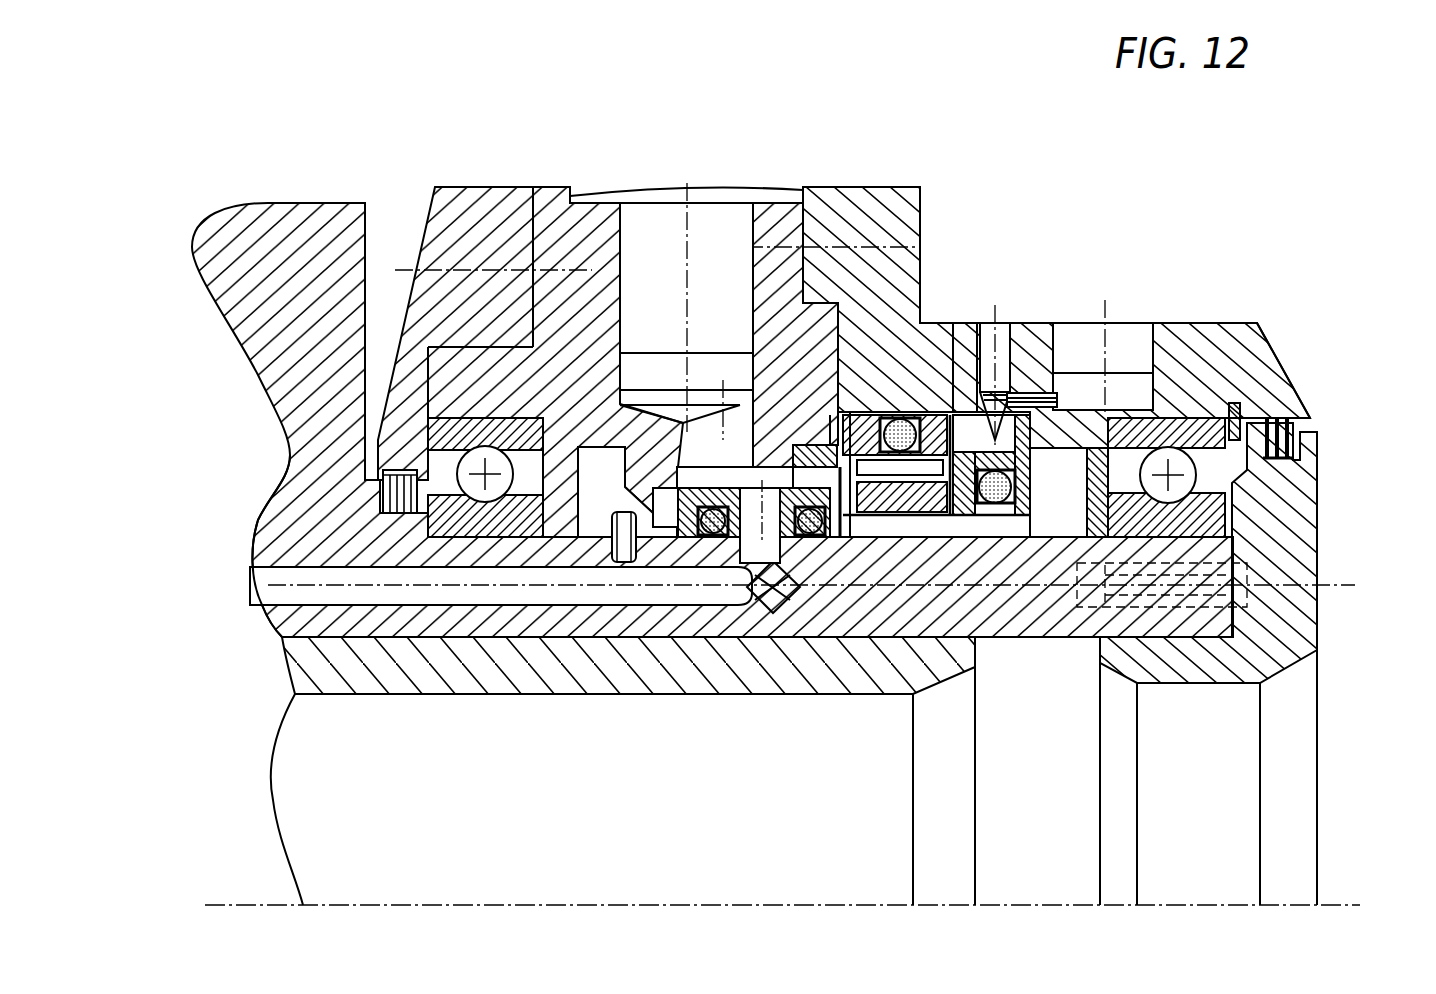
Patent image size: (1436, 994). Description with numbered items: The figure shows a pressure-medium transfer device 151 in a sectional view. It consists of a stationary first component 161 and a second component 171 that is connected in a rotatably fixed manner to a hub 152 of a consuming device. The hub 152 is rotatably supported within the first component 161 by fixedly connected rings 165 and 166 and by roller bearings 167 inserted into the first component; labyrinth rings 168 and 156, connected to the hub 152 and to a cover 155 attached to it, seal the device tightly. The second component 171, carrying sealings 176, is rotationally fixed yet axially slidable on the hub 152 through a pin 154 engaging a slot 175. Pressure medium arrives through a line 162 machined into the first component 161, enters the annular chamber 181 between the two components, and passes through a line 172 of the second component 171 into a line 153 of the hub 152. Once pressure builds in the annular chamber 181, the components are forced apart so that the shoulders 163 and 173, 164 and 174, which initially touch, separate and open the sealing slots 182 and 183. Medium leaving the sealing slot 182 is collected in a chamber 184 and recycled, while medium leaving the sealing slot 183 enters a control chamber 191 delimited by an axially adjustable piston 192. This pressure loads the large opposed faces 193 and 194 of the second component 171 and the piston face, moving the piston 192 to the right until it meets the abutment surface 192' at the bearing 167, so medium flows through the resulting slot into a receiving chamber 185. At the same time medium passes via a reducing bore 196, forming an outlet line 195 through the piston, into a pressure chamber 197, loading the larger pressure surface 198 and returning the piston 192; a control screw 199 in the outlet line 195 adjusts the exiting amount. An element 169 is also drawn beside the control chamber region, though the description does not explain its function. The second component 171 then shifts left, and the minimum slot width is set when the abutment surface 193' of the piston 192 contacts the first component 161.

The device 151 is at (990, 137).
The hub 152 is at (300, 250).
The line 153 is at (290, 582).
The pin 154 is at (648, 560).
The cover 155 is at (1283, 643).
The labyrinth ring 156 is at (1292, 425).
The first component 161 is at (560, 197).
The line 162 is at (650, 250).
The shoulder 163 is at (713, 533).
The shoulder 164 is at (812, 450).
The ring 165 is at (468, 230).
The ring 166 is at (1250, 365).
The roller bearing 167 is at (447, 440).
The labyrinth ring 168 is at (382, 492).
The retaining ring 169 is at (948, 325).
The second component 171 is at (700, 480).
The line 172 is at (758, 565).
The shoulder 173 is at (735, 482).
The shoulder 174 is at (812, 533).
The slot 175 is at (612, 540).
The sealing 176 is at (800, 482).
The annular chamber 181 is at (758, 455).
The sealing slot 182 is at (688, 468).
The sealing slot 183 is at (848, 440).
The chamber 184 is at (548, 520).
The receiving chamber 185 is at (1217, 485).
The control chamber 191 is at (905, 415).
The piston 192 is at (966, 618).
The abutment surface 192' is at (1014, 596).
The face 193 is at (887, 580).
The abutment surface 193' is at (963, 318).
The face 194 is at (900, 482).
The outlet line 195 is at (1030, 420).
The reducing bore 196 is at (960, 500).
The pressure chamber 197 is at (1010, 395).
The pressure surface 198 is at (1065, 335).
The control screw 199 is at (997, 320).